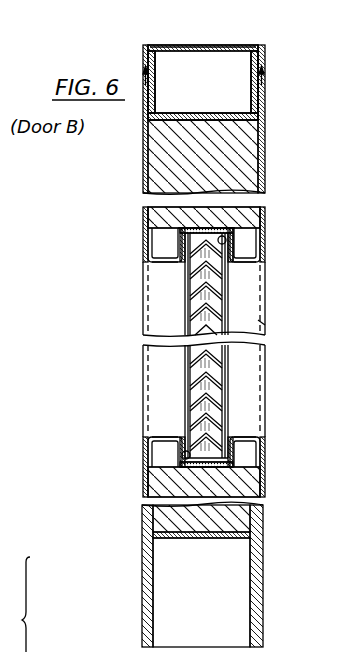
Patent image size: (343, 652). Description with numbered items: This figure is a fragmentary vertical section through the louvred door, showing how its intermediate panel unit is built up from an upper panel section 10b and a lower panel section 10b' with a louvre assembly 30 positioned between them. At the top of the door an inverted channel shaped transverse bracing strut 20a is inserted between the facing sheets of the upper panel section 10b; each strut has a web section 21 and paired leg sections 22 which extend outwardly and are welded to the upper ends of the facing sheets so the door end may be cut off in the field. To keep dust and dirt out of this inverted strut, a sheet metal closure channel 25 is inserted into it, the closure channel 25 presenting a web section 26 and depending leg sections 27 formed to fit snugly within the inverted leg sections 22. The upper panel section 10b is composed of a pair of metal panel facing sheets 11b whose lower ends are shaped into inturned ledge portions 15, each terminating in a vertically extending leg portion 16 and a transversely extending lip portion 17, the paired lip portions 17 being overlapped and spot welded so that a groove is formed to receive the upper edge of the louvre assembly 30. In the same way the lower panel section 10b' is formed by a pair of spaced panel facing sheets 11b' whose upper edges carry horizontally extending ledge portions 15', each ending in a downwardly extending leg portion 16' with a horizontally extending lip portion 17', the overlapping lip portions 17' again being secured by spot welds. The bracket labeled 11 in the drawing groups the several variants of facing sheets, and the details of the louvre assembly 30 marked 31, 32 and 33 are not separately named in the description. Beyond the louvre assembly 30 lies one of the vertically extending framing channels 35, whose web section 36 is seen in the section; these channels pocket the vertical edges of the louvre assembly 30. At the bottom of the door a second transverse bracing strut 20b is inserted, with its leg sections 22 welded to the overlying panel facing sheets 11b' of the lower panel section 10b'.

The leg sections 22 is at (147, 44).
The closure channel 25 is at (200, 44).
The web section 26 is at (221, 44).
The depending leg sections 27 is at (158, 68).
The transverse bracing strut 20a is at (188, 112).
The web section 21 is at (222, 114).
The upper panel section 10b is at (238, 174).
The lower panel section 10b' is at (239, 507).
The panel facing sheets 11b is at (201, 352).
The panel facing sheets 11b' is at (233, 476).
The vertically extending leg portion 16 is at (199, 248).
The downwardly extending leg portion 16' is at (205, 452).
The inturned ledge portions 15 is at (199, 273).
The horizontally extending ledge portions 15' is at (202, 417).
The transversely extending lip portion 17 is at (205, 344).
The horizontally extending lip portion 17' is at (217, 333).
The louvre assembly 30 is at (183, 307).
The sealing strip side 31 is at (216, 372).
The sealing strip chevron ribs 32 is at (226, 392).
The bead 33 is at (226, 243).
The framing channel 35 is at (263, 298).
The web section 36 is at (252, 323).
The transverse bracing strut 20b is at (205, 541).
The edge strip designations 11 is at (42, 604).